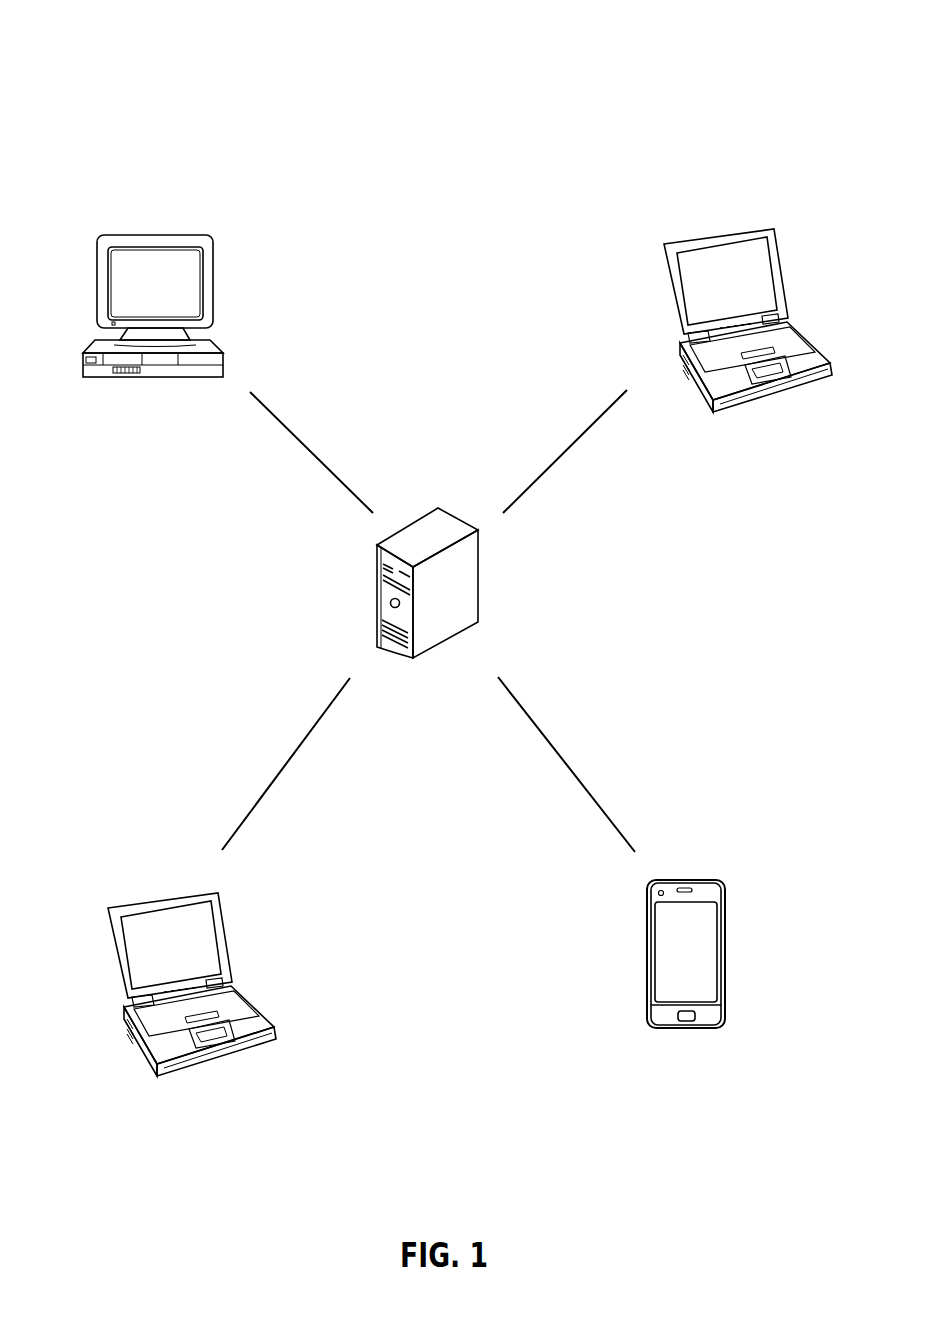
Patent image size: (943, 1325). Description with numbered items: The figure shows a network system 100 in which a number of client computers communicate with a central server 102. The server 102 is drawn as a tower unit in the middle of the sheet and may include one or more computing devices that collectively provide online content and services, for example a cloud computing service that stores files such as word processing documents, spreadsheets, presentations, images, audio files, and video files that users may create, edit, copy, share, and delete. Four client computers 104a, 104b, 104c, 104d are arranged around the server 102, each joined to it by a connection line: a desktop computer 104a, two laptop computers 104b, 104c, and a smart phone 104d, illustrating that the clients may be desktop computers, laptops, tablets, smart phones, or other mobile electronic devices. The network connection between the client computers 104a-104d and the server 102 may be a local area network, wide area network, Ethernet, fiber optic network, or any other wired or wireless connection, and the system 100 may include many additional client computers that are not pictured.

The network system 100 is at (262, 38).
The server 102 is at (438, 508).
The client computer 104a is at (127, 232).
The client computer 104b is at (677, 243).
The client computer 104c is at (125, 905).
The client computer 104d is at (695, 882).